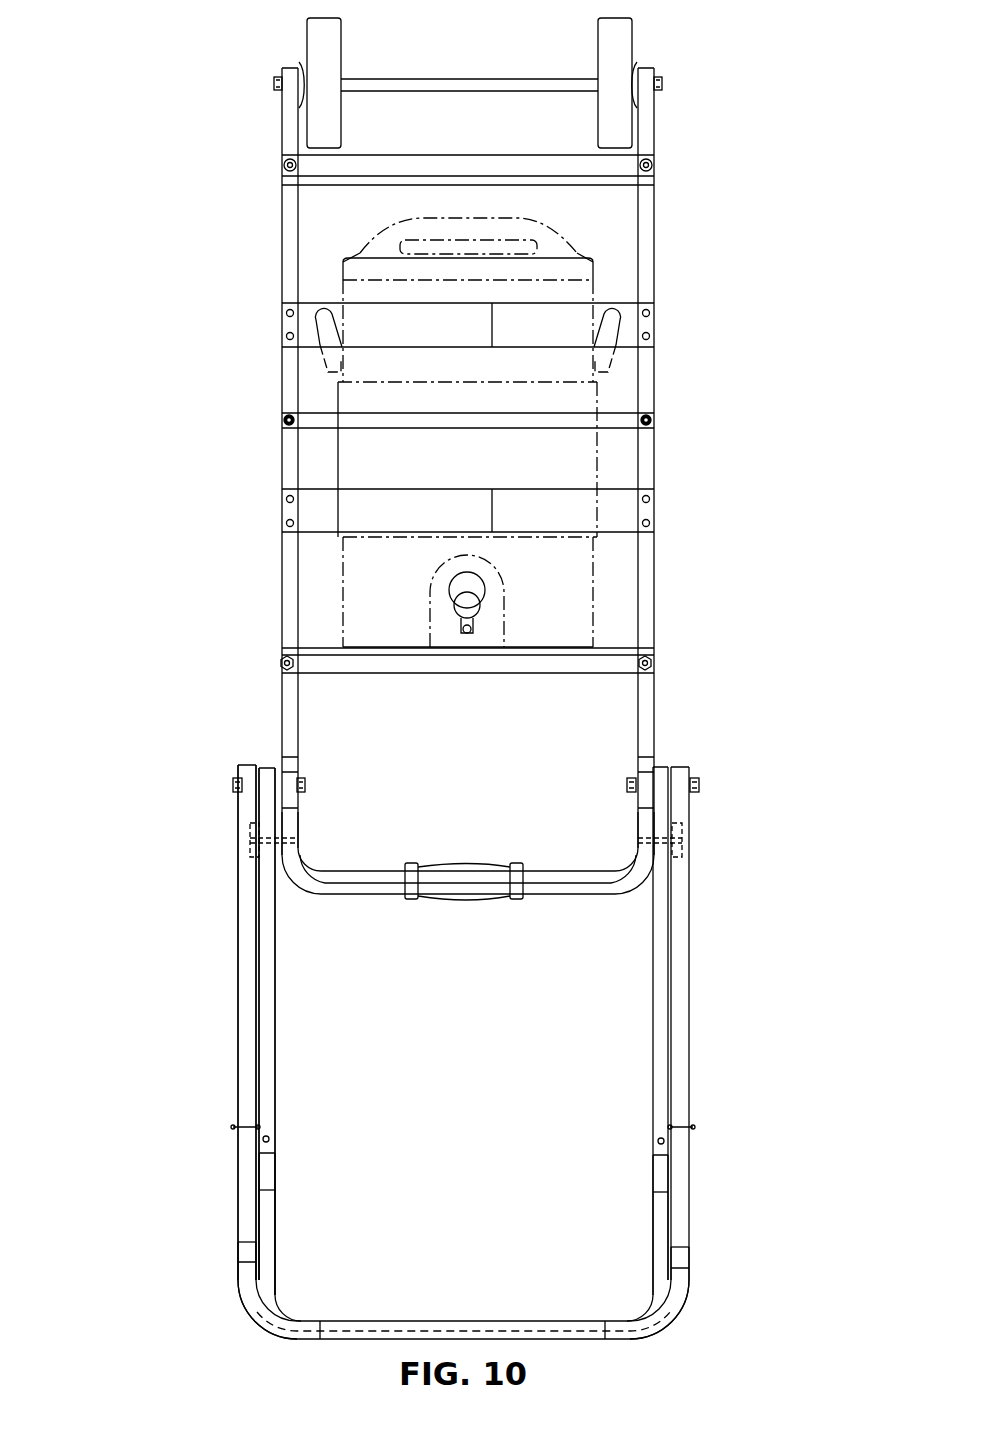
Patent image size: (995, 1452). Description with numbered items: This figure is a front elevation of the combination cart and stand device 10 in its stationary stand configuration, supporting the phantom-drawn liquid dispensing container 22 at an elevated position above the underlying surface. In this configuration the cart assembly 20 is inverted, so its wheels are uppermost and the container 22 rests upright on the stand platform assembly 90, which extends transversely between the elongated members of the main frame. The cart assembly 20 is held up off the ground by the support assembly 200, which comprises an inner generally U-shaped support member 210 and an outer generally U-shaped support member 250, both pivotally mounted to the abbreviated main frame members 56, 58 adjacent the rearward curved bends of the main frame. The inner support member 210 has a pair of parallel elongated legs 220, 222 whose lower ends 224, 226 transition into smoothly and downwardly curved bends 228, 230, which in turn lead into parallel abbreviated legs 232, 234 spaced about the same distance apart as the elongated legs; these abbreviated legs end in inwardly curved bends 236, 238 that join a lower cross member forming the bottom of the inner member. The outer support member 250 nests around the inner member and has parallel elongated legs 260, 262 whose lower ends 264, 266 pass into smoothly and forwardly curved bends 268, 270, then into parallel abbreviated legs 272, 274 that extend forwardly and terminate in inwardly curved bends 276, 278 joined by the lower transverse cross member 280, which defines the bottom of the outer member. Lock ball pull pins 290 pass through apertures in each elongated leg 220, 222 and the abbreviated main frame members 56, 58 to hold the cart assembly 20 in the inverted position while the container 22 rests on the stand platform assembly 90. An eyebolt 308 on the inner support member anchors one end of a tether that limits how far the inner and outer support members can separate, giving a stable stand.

The combination cart and stand device 10 is at (140, 78).
The cart assembly 20 is at (255, 322).
The liquid dispensing container 22 is at (330, 586).
The abbreviated main frame member 56 is at (297, 826).
The abbreviated main frame member 58 is at (639, 826).
The stand platform assembly 90 is at (392, 680).
The support assembly 200 is at (740, 797).
The inner generally U-shaped support member 210 is at (293, 1038).
The elongated leg 220 is at (269, 958).
The elongated leg 222 is at (660, 992).
The lower end 224 is at (272, 1152).
The lower end 226 is at (652, 1153).
The downwardly curved bend 228 is at (268, 1172).
The downwardly curved bend 230 is at (660, 1172).
The abbreviated leg 232 is at (270, 1240).
The abbreviated leg 234 is at (653, 1240).
The inwardly curved bend 236 is at (285, 1303).
The inwardly curved bend 238 is at (652, 1300).
The outer generally U-shaped support member 250 is at (235, 1005).
The elongated leg 260 is at (240, 938).
The elongated leg 262 is at (683, 938).
The lower end 264 is at (241, 1243).
The lower end 266 is at (683, 1230).
The forwardly curved bend 268 is at (243, 1258).
The forwardly curved bend 270 is at (684, 1256).
The abbreviated leg 272 is at (246, 1283).
The abbreviated leg 274 is at (686, 1292).
The inwardly curved bend 276 is at (255, 1322).
The inwardly curved bend 278 is at (672, 1322).
The lower transverse cross member 280 is at (458, 1330).
The lock ball pull pin 290 is at (247, 851).
The eyebolt 308 is at (271, 1130).